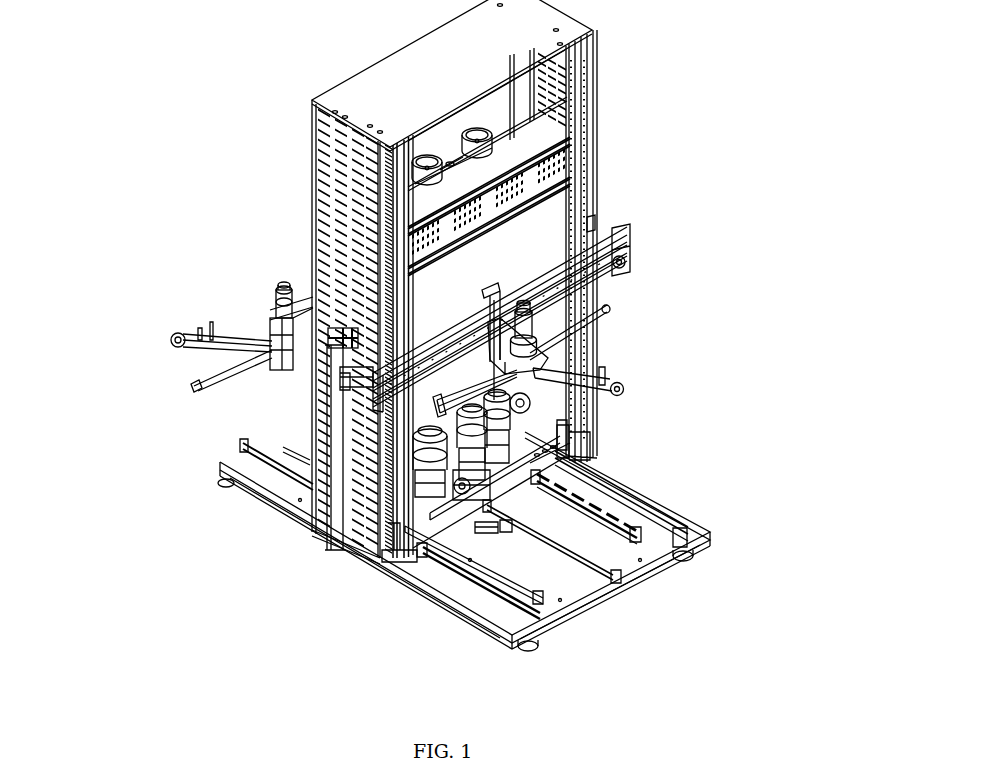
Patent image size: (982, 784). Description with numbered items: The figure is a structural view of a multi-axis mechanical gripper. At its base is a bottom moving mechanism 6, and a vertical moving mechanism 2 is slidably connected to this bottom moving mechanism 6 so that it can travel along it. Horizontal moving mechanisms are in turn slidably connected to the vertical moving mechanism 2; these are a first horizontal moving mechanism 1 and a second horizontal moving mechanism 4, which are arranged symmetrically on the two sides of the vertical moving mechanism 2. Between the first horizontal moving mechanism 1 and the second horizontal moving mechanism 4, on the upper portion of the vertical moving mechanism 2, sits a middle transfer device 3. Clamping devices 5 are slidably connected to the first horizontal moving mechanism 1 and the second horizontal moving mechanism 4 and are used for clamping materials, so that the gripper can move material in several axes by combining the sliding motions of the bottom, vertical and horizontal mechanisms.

The first horizontal moving mechanism 1 is at (262, 333).
The vertical moving mechanism 2 is at (320, 206).
The middle transfer device 3 is at (457, 155).
The second horizontal moving mechanism 4 is at (600, 253).
The clamping devices 5 is at (543, 348).
The bottom moving mechanism 6 is at (623, 553).